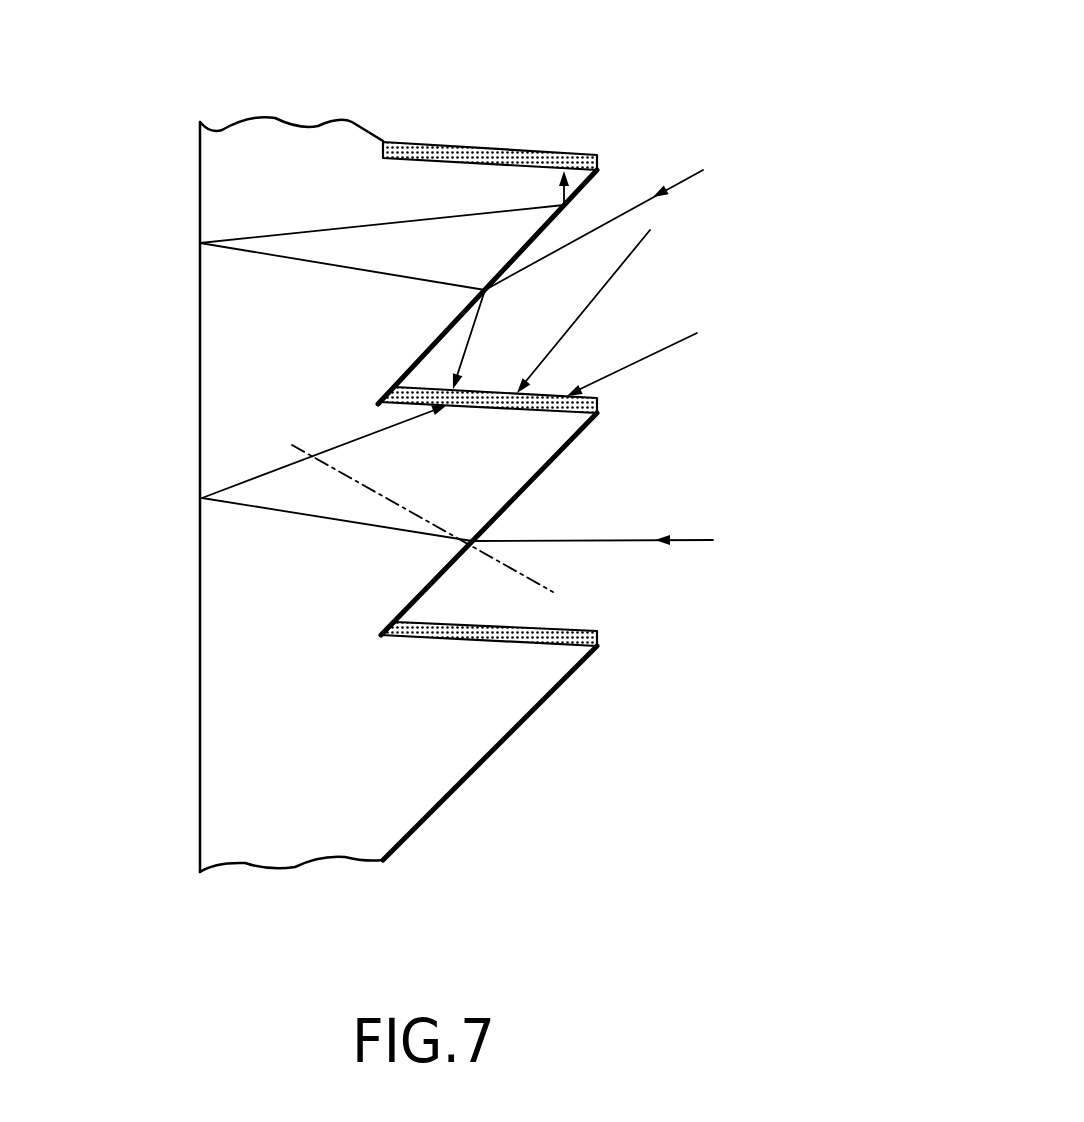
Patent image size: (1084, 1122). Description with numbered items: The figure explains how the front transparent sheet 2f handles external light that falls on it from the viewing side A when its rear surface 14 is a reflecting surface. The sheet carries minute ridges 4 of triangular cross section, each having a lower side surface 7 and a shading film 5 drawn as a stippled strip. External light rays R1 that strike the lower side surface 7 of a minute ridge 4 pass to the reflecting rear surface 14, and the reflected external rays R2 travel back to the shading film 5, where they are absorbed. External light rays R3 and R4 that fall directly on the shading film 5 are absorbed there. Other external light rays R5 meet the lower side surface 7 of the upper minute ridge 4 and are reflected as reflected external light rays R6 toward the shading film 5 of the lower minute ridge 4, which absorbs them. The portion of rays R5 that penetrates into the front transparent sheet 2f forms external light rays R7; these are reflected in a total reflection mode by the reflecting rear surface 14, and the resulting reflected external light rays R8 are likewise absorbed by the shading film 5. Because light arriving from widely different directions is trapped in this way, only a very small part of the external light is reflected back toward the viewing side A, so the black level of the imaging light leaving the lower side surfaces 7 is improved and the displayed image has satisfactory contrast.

The minute ridge 4 is at (547, 435).
The shading film 5 is at (470, 142).
The lower side surface 7 is at (543, 232).
The rear surface 14 is at (200, 686).
The front transparent sheet 2f is at (150, 397).
The viewing side A is at (875, 393).
The external light rays R1 is at (592, 523).
The reflected external rays R2 is at (377, 498).
The external light rays R3 is at (594, 311).
The external light rays R4 is at (639, 364).
The external light rays R5 is at (603, 230).
The reflected external light rays R6 is at (486, 339).
The external light rays R7 is at (382, 243).
The reflected external light rays R8 is at (530, 187).